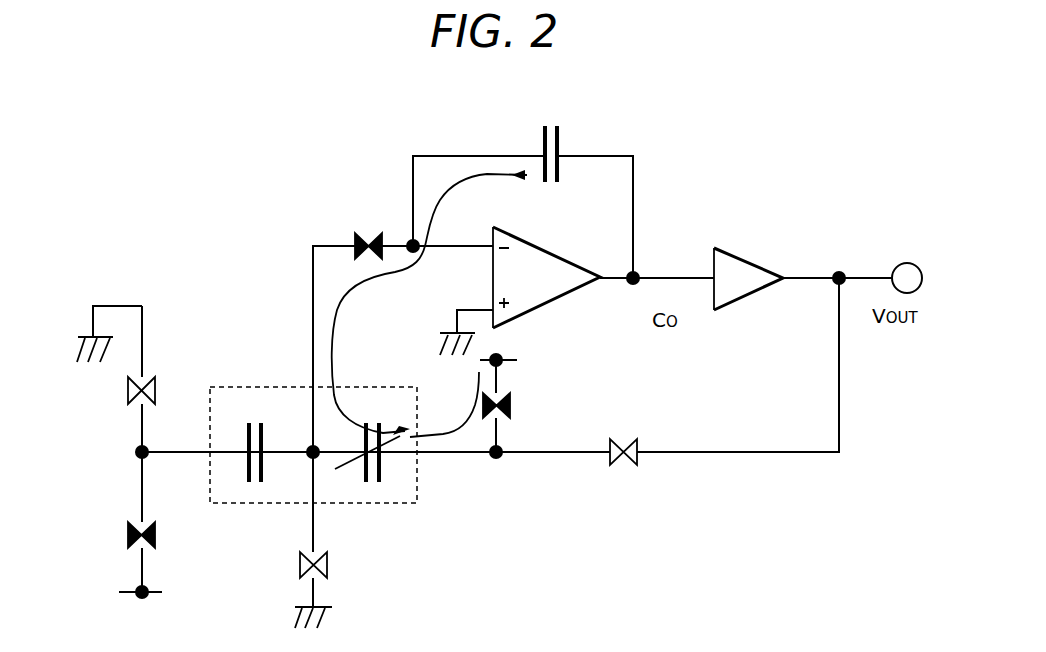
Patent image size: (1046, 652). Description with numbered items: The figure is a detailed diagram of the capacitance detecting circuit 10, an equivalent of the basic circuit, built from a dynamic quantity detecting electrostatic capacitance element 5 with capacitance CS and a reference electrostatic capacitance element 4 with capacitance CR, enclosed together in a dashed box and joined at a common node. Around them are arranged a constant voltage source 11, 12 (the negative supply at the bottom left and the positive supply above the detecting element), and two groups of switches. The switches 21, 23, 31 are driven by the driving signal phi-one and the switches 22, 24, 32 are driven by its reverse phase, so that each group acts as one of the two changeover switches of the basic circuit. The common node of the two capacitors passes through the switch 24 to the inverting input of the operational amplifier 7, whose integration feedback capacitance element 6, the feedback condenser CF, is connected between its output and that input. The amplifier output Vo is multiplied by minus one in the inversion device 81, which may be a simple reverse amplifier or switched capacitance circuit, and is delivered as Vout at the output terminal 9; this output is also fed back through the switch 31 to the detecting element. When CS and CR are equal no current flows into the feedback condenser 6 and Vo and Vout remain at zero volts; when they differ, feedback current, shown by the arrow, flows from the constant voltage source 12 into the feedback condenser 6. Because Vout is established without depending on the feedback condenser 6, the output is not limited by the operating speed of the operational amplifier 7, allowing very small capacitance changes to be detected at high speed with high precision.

The reference electrostatic capacitance element 4 is at (248, 485).
The dynamic quantity detecting electrostatic capacitance element 5 is at (375, 487).
The integration feedback capacitance element 6 is at (567, 142).
The operational amplifier 7 is at (563, 298).
The output terminal 9 is at (905, 262).
The capacitance detecting circuit 10 is at (695, 162).
The constant voltage source 11 is at (160, 593).
The constant voltage source 12 is at (518, 365).
The switch 21 is at (155, 373).
The switch 22 is at (127, 535).
The switch 23 is at (327, 580).
The switch 24 is at (368, 228).
The switch 31 is at (623, 463).
The switch 32 is at (512, 422).
The inversion device 81 is at (757, 262).